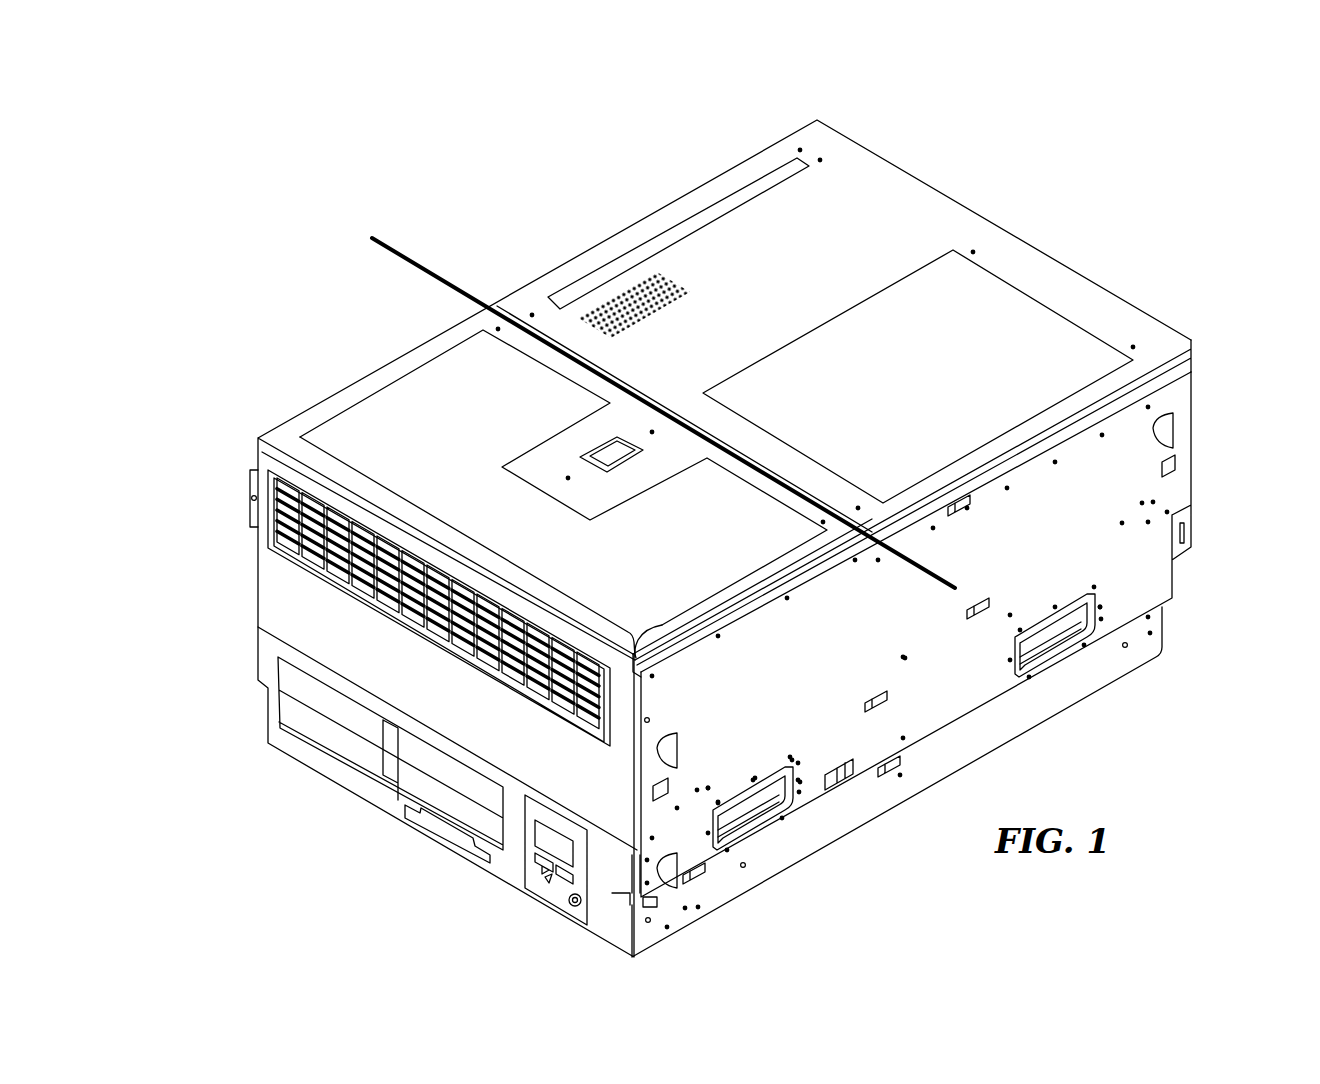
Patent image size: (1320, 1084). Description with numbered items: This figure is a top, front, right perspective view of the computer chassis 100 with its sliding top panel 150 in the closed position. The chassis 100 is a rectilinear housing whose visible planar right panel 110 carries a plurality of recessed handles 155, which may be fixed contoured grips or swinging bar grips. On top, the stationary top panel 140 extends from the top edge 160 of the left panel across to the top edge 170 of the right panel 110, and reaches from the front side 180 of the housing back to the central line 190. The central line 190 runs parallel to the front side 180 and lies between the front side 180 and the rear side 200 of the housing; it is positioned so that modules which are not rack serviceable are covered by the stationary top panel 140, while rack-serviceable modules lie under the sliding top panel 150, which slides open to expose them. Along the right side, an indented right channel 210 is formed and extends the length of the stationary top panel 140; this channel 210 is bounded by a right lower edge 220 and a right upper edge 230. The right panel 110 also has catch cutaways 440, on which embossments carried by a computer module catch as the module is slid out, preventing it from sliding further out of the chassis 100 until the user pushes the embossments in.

The computer chassis 100 is at (1163, 214).
The right panel 110 is at (1153, 583).
The stationary top panel 140 is at (357, 417).
The sliding top panel 150 is at (911, 205).
The recessed handles 155 is at (1063, 627).
The top edge of the left panel 160 is at (407, 350).
The top edge of the right panel 170 is at (790, 580).
The front side of the housing 180 is at (326, 493).
The central line 190 is at (408, 253).
The rear side of the housing 200 is at (892, 155).
The right channel 210 is at (703, 637).
The right lower edge 220 is at (636, 672).
The right upper edge 230 is at (622, 638).
The catch cutaways 440 is at (1177, 466).